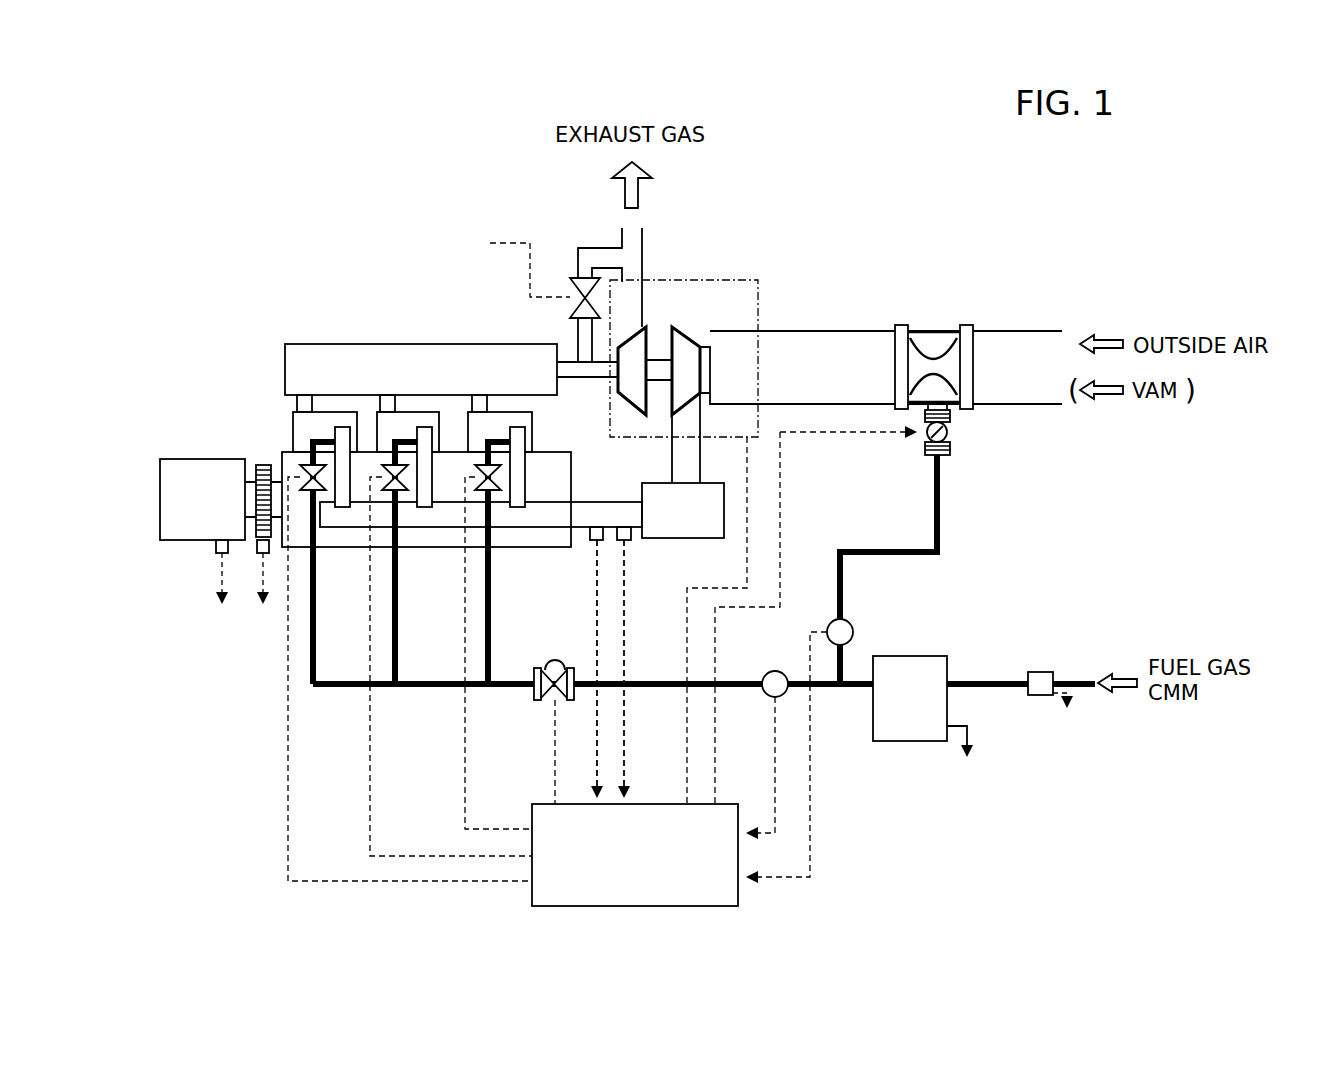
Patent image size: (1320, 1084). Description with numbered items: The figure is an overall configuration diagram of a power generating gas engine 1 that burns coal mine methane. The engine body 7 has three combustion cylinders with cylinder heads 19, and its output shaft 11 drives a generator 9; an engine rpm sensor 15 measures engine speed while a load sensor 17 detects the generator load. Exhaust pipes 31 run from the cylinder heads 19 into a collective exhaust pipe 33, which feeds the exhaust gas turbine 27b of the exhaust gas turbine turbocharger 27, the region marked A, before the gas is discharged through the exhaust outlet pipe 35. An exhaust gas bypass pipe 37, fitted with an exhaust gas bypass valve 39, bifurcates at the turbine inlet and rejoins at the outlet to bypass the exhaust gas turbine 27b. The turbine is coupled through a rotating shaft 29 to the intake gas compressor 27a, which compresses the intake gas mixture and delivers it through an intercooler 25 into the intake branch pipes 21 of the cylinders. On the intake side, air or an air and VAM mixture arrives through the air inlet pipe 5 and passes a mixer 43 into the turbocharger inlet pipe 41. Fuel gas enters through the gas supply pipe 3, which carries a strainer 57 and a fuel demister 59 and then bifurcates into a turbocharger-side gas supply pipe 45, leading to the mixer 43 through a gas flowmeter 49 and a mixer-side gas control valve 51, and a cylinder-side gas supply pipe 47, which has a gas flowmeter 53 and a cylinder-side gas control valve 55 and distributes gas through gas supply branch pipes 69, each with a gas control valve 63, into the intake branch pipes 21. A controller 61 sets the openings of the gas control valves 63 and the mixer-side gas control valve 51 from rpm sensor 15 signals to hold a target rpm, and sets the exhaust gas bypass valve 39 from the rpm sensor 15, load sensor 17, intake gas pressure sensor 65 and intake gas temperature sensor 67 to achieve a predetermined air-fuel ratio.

The power generating gas engine 1 is at (223, 330).
The gas supply pipe 3 is at (1075, 670).
The air inlet pipe 5 is at (990, 331).
The engine body 7 is at (280, 450).
The generator 9 is at (160, 499).
The output shaft 11 is at (278, 468).
The engine rpm sensor 15 is at (258, 553).
The load sensor 17 is at (218, 553).
The cylinder heads 19 is at (367, 422).
The intake branch pipes 21 is at (332, 488).
The intercooler 25 is at (711, 538).
The exhaust gas turbine turbocharger 27 is at (660, 312).
The intake gas compressor 27a is at (688, 327).
The exhaust gas turbine 27b is at (630, 400).
The rotating shaft 29 is at (658, 385).
The exhaust pipes 31 is at (397, 402).
The collective exhaust pipe 33 is at (300, 344).
The exhaust outlet pipe 35 is at (644, 238).
The exhaust gas bypass pipe 37 is at (593, 248).
The exhaust gas bypass valve 39 is at (578, 282).
The turbocharger inlet pipe 41 is at (797, 331).
The mixer 43 is at (930, 326).
The turbocharger-side gas supply pipe 45 is at (918, 558).
The cylinder-side gas supply pipe 47 is at (745, 692).
The gas flowmeter 49 is at (855, 632).
The mixer-side gas control valve 51 is at (955, 433).
The gas flowmeter 53 is at (776, 671).
The cylinder-side gas control valve 55 is at (560, 665).
The strainer 57 is at (1040, 697).
The fuel demister 59 is at (915, 742).
The controller 61 is at (738, 890).
The gas control valves for discrete cylinders 63 is at (330, 507).
The intake gas pressure sensor 65 is at (590, 540).
The intake gas temperature sensor 67 is at (628, 540).
The gas supply branch pipes 69 is at (318, 640).
The turbocharger unit A is at (745, 278).